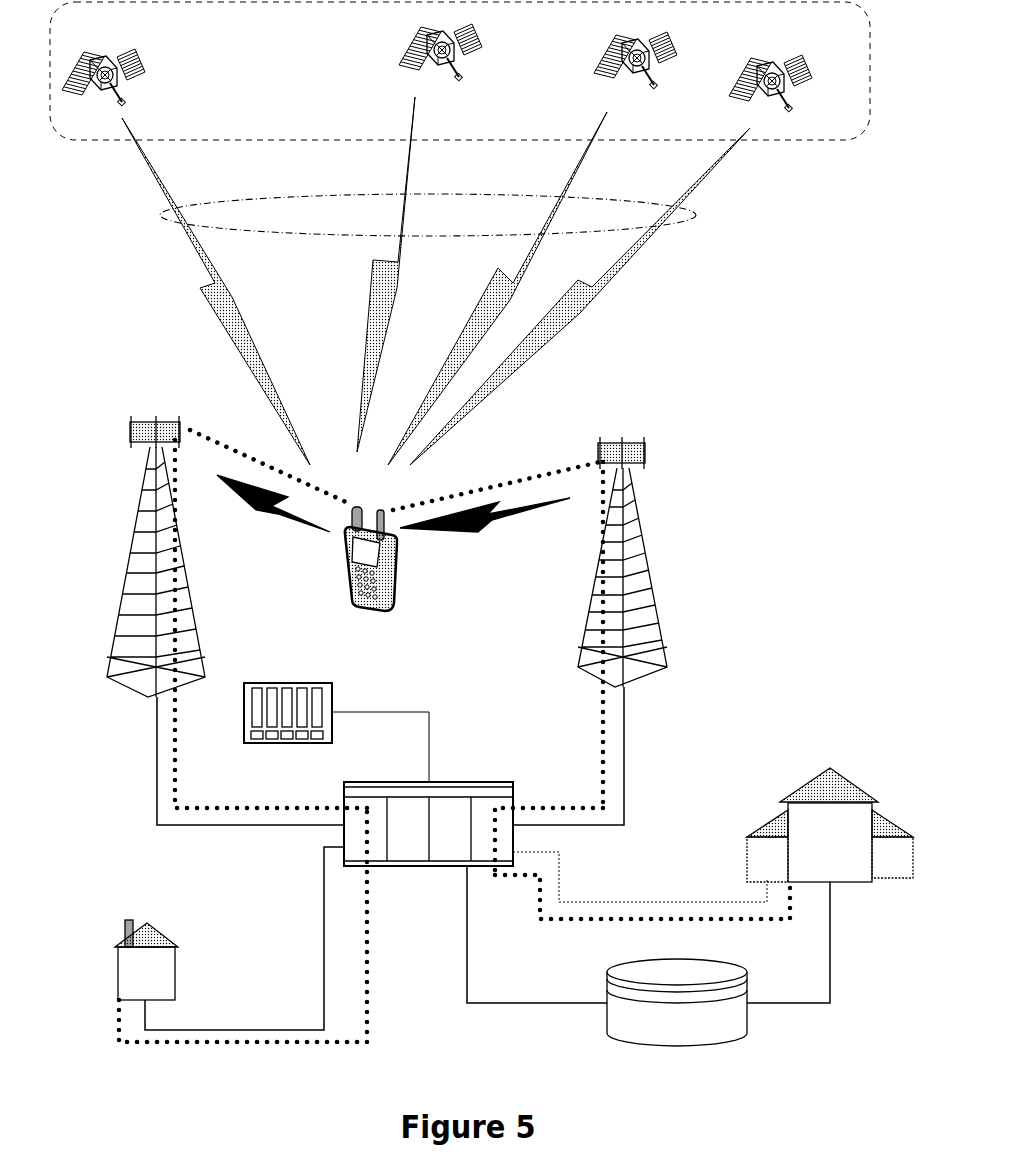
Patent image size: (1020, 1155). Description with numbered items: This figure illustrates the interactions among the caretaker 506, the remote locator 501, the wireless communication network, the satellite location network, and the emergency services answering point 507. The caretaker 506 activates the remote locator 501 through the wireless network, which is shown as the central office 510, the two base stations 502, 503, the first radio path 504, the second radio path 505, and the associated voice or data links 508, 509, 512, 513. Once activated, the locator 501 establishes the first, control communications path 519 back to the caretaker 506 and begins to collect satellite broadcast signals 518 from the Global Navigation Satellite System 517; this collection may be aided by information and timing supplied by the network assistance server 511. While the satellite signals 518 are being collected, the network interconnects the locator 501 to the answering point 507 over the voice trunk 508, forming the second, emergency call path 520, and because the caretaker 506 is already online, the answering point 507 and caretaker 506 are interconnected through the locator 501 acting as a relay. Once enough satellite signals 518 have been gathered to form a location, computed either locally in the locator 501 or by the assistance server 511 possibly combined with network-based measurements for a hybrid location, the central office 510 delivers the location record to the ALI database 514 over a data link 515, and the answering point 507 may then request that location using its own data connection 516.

The remote locator 501 is at (371, 578).
The base station 502 is at (144, 556).
The base station 503 is at (645, 562).
The first radio path 504 is at (273, 514).
The second radio path 505 is at (485, 535).
The caretaker 506 is at (146, 938).
The answering point 507 is at (830, 803).
The voice trunk 508 is at (642, 892).
The voice or data link 509 is at (244, 938).
The central office 510 is at (428, 847).
The assistance server 511 is at (336, 732).
The voice or data link 512 is at (234, 632).
The voice or data link 513 is at (599, 643).
The ALI database 514 is at (677, 1002).
The connection 515 is at (537, 934).
The data connection 516 is at (817, 942).
The Global Navigation Satellite System 517 is at (460, 71).
The satellite broadcast signals 518 is at (451, 228).
The first, control communications path 519 is at (348, 1058).
The second, emergency call path 520 is at (580, 792).